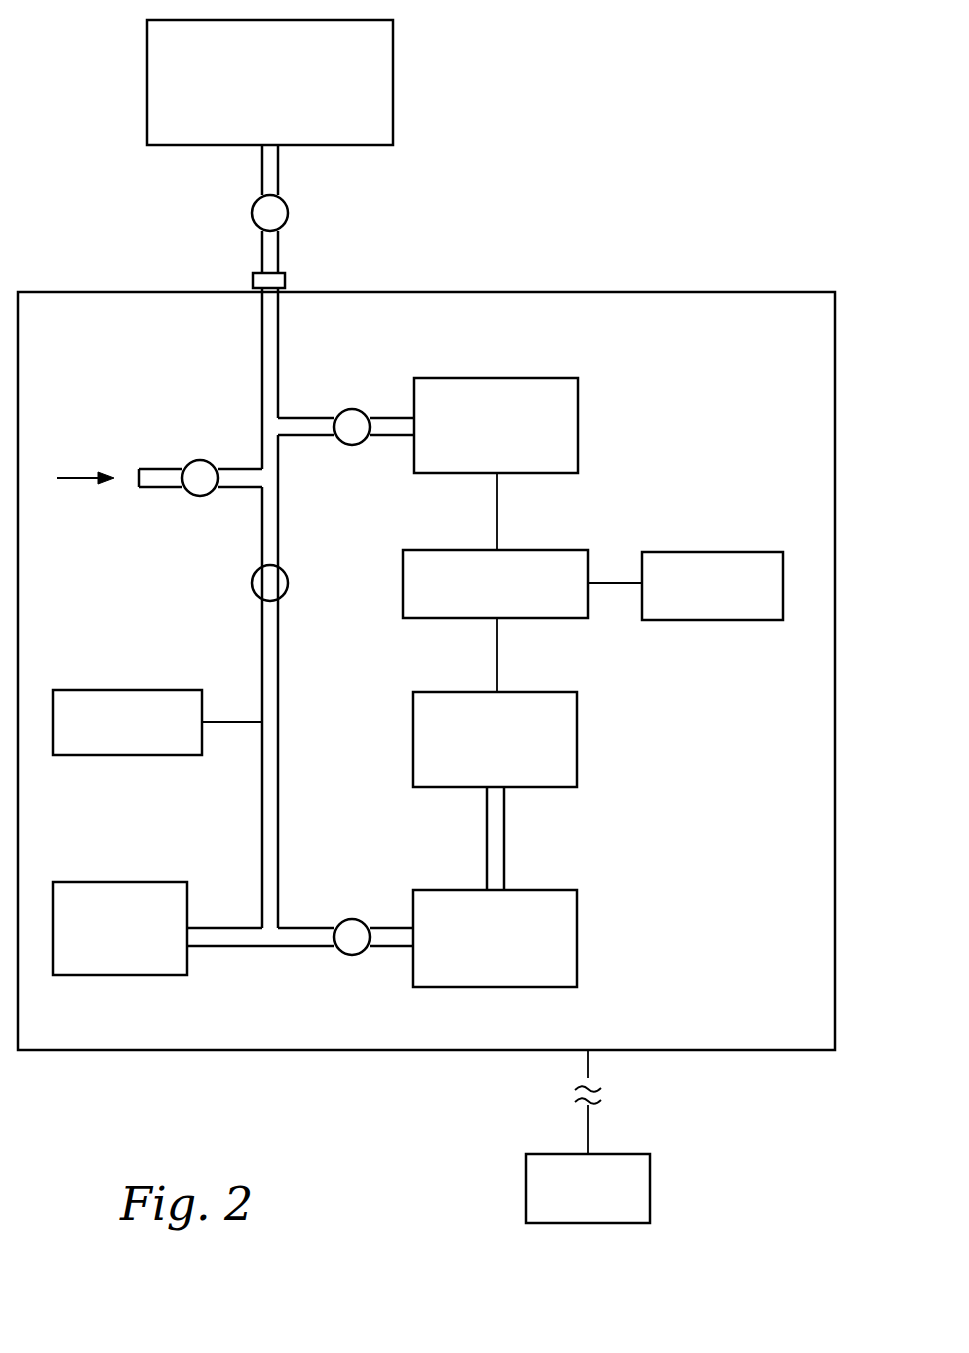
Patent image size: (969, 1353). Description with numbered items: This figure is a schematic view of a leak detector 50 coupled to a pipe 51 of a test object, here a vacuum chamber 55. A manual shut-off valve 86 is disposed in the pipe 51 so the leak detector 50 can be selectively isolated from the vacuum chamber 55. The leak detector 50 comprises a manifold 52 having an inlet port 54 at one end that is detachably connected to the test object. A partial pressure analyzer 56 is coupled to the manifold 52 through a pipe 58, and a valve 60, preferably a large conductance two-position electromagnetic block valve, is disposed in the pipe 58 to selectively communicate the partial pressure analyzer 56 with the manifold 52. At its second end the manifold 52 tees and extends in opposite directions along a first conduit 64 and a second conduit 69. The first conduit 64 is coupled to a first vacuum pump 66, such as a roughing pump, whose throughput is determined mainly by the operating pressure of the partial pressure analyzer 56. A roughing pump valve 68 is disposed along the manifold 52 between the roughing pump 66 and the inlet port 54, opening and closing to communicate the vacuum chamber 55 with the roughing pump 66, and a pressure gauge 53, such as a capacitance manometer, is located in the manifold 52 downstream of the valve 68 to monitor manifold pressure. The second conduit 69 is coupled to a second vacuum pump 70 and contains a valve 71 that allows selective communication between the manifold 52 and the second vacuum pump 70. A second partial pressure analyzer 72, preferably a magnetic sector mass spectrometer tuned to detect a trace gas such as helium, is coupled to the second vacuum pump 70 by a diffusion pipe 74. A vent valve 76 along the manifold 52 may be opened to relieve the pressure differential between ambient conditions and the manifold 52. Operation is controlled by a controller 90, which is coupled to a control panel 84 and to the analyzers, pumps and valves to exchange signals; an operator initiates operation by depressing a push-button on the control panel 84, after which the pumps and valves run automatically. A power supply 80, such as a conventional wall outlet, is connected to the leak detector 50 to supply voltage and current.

The leak detector 50 is at (760, 293).
The pipe 51 is at (281, 257).
The manifold 52 is at (256, 797).
The pressure gauge 53 is at (123, 690).
The inlet port 54 is at (258, 275).
The vacuum chamber 55 is at (147, 81).
The partial pressure analyzer 56 is at (497, 378).
The pipe 58 is at (302, 418).
The valve 60 is at (350, 409).
The first conduit 64 is at (214, 948).
The first vacuum pump 66 is at (108, 882).
The roughing pump valve 68 is at (252, 582).
The second conduit 69 is at (302, 926).
The second vacuum pump 70 is at (579, 938).
The valve 71 is at (352, 918).
The second partial pressure analyzer 72 is at (579, 738).
The diffusion pipe 74 is at (506, 842).
The vent valve 76 is at (200, 460).
The power supply 80 is at (525, 1190).
The control panel 84 is at (728, 551).
The manual shut-off valve 86 is at (290, 212).
The controller 90 is at (455, 549).